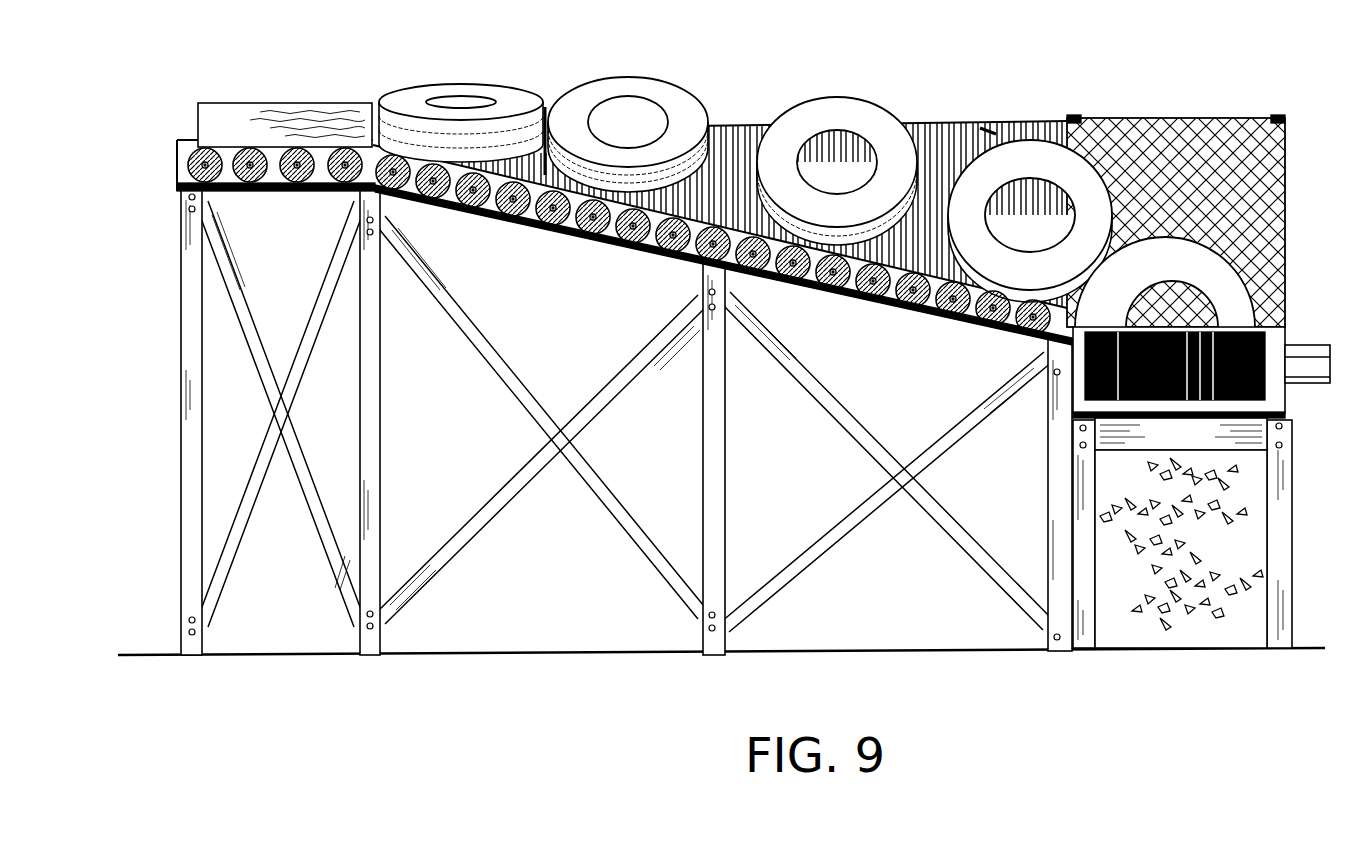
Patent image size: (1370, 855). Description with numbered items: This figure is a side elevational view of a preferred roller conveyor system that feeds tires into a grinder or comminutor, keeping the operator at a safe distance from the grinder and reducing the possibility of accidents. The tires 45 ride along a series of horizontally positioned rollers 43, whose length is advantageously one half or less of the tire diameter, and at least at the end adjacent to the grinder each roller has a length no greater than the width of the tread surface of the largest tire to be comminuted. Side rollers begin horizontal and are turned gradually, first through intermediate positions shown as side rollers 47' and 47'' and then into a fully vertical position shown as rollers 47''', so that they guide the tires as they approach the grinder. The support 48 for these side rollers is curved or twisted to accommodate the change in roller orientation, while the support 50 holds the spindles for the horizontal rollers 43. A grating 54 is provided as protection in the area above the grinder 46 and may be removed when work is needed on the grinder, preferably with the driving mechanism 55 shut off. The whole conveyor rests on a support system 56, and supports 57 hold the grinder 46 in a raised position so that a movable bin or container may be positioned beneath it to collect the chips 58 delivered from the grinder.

The rollers 43 is at (250, 190).
The tires 45 is at (279, 110).
The grinder 46 is at (1285, 296).
The side rollers (intermediate position) 47' is at (569, 250).
The side rollers (intermediate position) 47'' is at (787, 298).
The side rollers (vertical position) 47''' is at (1031, 91).
The support 48 is at (937, 120).
The support 50 is at (323, 187).
The grating 54 is at (1213, 120).
The driving mechanism 55 is at (1293, 388).
The support system 56 is at (516, 404).
The supports 57 is at (1283, 570).
The chips 58 is at (1240, 517).